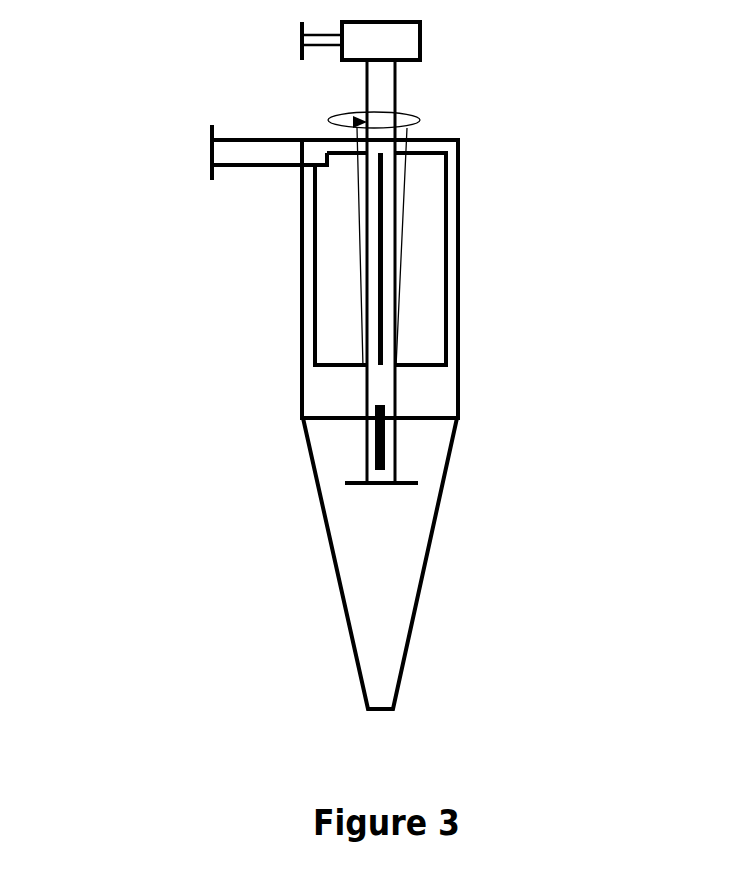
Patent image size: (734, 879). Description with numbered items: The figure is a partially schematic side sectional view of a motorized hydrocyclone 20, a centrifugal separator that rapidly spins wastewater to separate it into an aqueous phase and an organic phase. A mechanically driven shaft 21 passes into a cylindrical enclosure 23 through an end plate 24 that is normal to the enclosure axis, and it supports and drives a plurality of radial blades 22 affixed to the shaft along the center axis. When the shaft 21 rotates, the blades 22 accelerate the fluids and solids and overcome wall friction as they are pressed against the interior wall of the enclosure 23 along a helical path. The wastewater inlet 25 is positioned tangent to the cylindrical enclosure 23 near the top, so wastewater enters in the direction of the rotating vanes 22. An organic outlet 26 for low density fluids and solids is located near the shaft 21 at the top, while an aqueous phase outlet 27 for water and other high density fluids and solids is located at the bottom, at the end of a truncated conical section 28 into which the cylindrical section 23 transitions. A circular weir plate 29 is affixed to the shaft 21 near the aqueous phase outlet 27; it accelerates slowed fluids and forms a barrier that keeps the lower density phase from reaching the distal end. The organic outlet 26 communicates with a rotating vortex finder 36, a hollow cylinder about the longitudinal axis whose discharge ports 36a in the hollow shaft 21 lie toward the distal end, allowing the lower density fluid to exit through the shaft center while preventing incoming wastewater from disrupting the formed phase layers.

The motorized hydrocyclone 20 is at (172, 378).
The mechanically driven shaft 21 is at (400, 85).
The radial blades 22 is at (423, 286).
The cylindrical enclosure 23 is at (461, 245).
The end plate 24 is at (423, 136).
The wastewater inlet 25 is at (198, 152).
The organic outlet 26 is at (302, 35).
The aqueous phase outlet 27 is at (364, 711).
The truncated conical section 28 is at (452, 500).
The circular weir plate 29 is at (345, 487).
The rotating vortex finder 36 is at (402, 457).
The discharge ports 36a is at (373, 445).